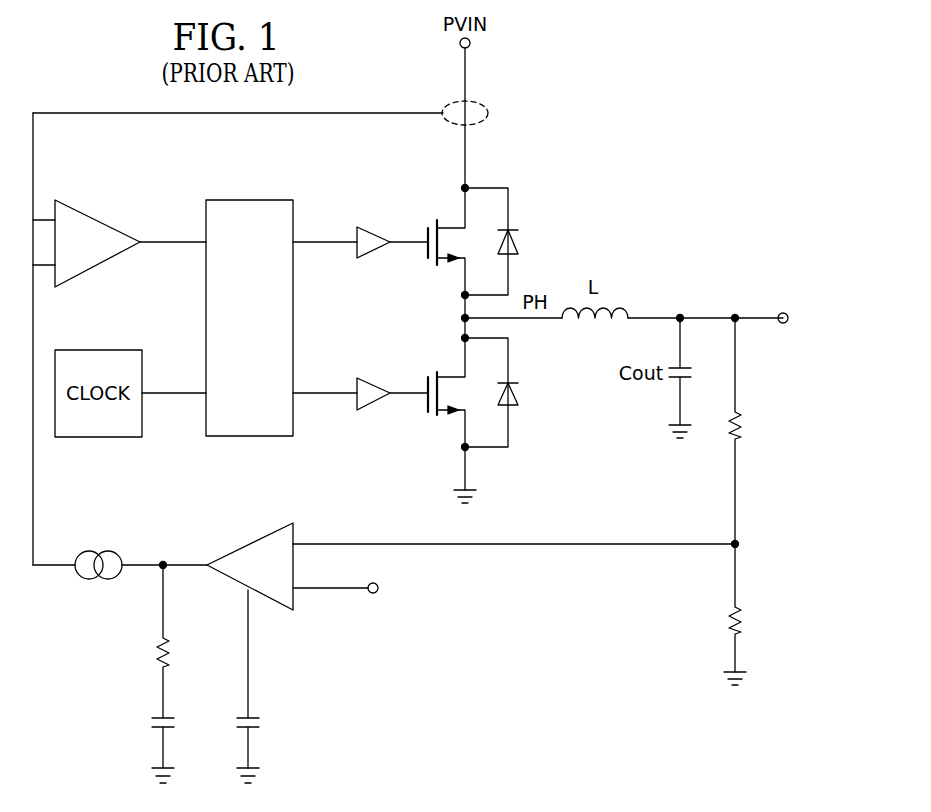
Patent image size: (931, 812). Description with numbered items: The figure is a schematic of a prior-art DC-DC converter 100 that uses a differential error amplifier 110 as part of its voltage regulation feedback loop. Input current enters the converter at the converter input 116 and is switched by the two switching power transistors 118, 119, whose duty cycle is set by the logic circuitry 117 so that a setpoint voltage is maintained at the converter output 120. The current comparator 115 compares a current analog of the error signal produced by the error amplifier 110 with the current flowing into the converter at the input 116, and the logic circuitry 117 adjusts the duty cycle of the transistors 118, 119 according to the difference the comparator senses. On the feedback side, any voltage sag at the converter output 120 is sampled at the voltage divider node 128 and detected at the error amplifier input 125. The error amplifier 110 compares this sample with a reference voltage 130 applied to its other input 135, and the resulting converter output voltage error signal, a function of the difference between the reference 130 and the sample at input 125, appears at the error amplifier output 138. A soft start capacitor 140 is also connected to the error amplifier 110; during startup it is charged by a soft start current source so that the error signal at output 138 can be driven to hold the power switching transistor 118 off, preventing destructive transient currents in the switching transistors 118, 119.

The DC-DC converter 100 is at (682, 90).
The differential error amplifier 110 is at (230, 552).
The current comparator 115 is at (98, 217).
The converter input 116 is at (427, 307).
The logic circuitry 117 is at (248, 200).
The switching power transistor 118 is at (416, 232).
The switching power transistor 119 is at (417, 378).
The converter output 120 is at (786, 312).
The error amplifier input 125 is at (525, 545).
The voltage divider node 128 is at (739, 548).
The reference voltage 130 is at (418, 600).
The error amplifier input 135 is at (320, 590).
The error amplifier output 138 is at (183, 568).
The soft start capacitor 140 is at (261, 722).